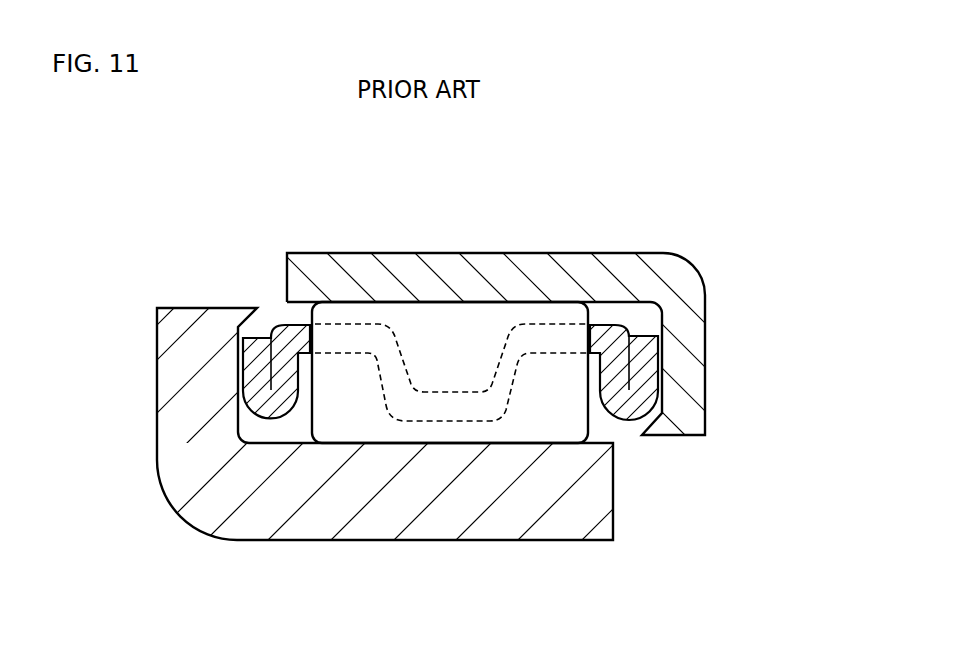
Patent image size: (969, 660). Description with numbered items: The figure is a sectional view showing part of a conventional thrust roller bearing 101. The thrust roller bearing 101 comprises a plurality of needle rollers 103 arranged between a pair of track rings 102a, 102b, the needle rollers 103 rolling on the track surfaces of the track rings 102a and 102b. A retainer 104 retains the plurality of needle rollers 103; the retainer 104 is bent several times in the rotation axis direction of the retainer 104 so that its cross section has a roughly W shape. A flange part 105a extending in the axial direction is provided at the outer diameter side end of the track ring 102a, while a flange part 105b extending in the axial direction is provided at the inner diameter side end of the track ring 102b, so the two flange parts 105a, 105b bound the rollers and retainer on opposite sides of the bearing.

The thrust roller bearing 101 is at (646, 211).
The track ring 102a is at (388, 520).
The track ring 102b is at (482, 270).
The needle roller 103 is at (542, 418).
The retainer 104 is at (278, 410).
The flange part 105a is at (168, 380).
The flange part 105b is at (693, 341).